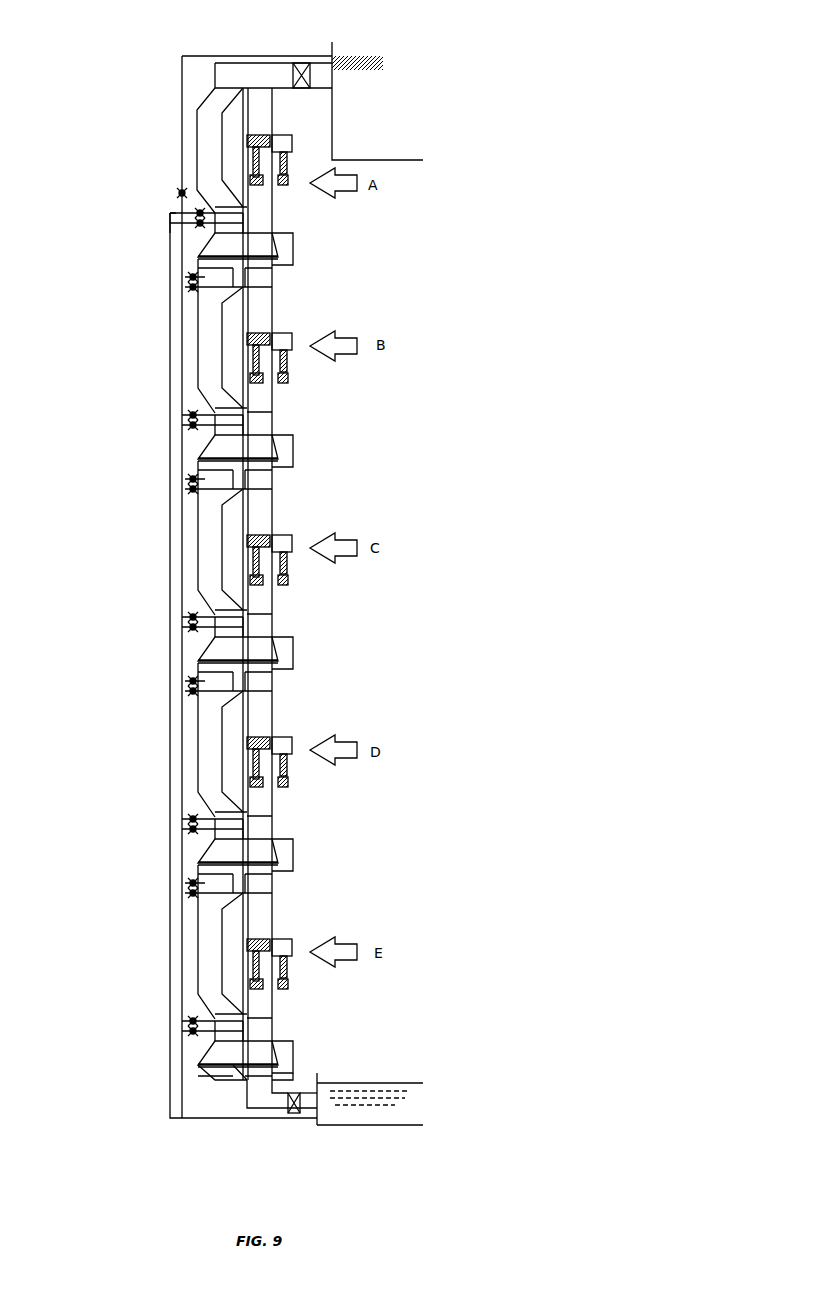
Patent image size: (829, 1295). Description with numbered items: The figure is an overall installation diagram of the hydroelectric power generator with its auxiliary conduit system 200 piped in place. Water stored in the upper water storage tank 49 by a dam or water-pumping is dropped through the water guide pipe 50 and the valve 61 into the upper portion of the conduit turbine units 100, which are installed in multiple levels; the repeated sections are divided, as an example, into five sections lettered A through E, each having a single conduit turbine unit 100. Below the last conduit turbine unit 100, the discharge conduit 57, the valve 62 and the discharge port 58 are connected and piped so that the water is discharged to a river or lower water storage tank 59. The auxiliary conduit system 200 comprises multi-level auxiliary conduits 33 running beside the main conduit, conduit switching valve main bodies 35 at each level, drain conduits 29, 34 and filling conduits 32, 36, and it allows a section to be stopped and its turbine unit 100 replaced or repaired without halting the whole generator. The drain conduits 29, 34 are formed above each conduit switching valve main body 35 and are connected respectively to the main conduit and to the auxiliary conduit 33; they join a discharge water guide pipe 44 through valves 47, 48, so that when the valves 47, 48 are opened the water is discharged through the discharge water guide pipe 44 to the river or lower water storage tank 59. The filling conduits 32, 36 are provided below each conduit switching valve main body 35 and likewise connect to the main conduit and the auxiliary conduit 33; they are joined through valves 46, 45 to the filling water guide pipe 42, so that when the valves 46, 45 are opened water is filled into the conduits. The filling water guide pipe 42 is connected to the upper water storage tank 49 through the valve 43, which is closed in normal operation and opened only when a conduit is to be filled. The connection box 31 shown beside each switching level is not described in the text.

The drain conduit 29 is at (268, 422).
The connection box 31 is at (292, 458).
The filling conduit 32 is at (272, 496).
The auxiliary conduit 33 is at (203, 334).
The drain conduit 34 is at (210, 405).
The conduit switching valve main body 35 is at (200, 457).
The filling conduit 36 is at (205, 497).
The filling water guide pipe 42 is at (182, 98).
The valve 43 is at (207, 903).
The discharge water guide pipe 44 is at (170, 302).
The valve 45 is at (190, 474).
The valve 46 is at (197, 492).
The valve 47 is at (190, 617).
The valve 48 is at (195, 636).
The upper water storage tank 49 is at (388, 160).
The water guide pipe 50 is at (321, 56).
The discharge conduit 57 is at (250, 1100).
The discharge port 58 is at (305, 1115).
The lower water storage tank 59 is at (405, 1100).
The valve 61 is at (296, 66).
The valve 62 is at (292, 1110).
The conduit turbine unit 100 is at (289, 127).
The auxiliary conduit system 200 is at (156, 232).